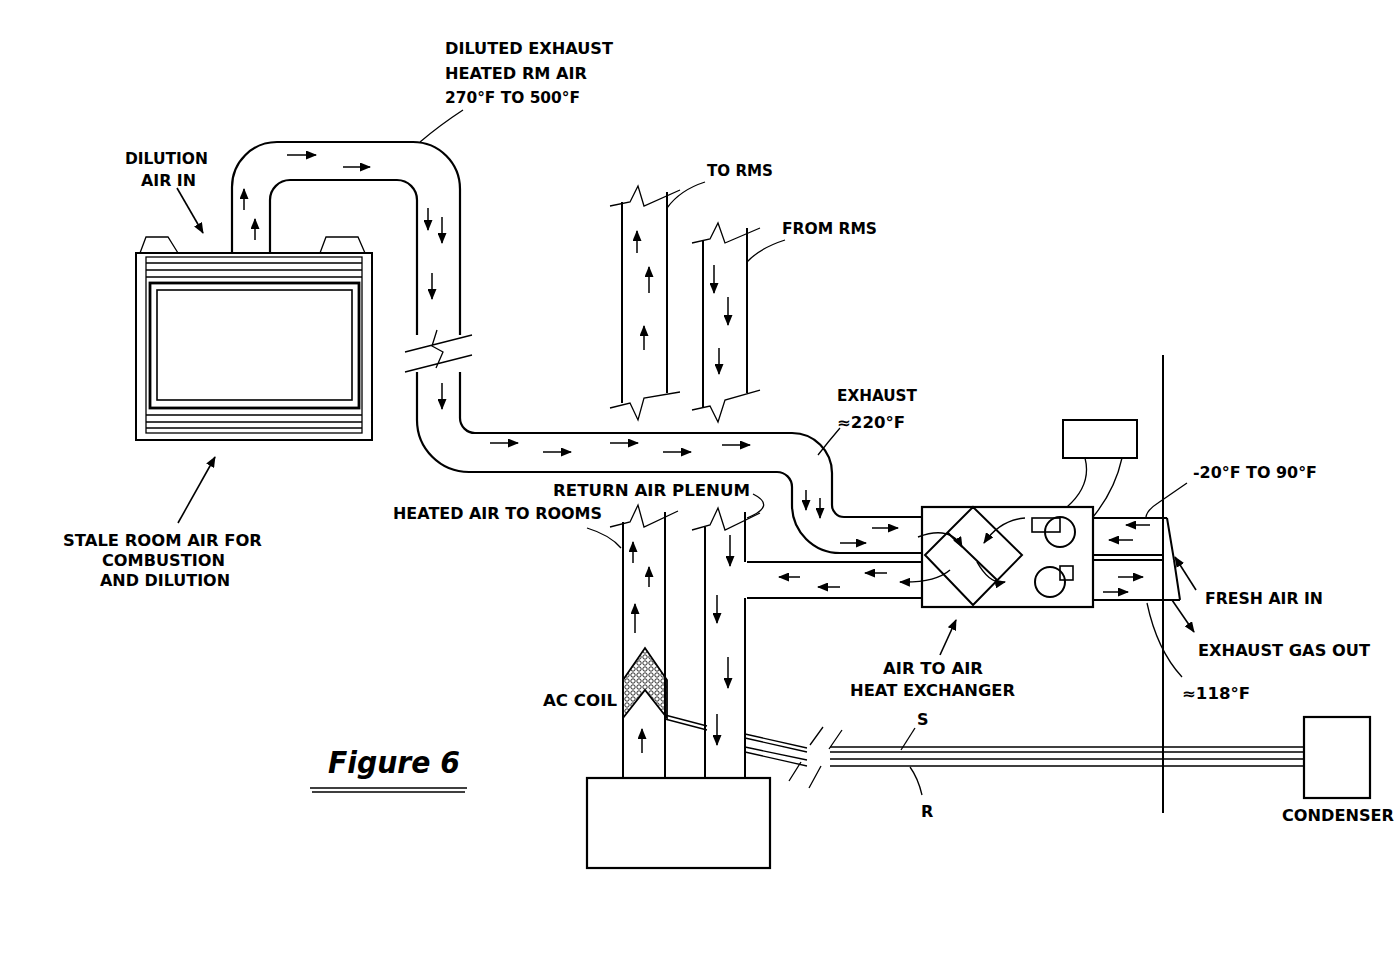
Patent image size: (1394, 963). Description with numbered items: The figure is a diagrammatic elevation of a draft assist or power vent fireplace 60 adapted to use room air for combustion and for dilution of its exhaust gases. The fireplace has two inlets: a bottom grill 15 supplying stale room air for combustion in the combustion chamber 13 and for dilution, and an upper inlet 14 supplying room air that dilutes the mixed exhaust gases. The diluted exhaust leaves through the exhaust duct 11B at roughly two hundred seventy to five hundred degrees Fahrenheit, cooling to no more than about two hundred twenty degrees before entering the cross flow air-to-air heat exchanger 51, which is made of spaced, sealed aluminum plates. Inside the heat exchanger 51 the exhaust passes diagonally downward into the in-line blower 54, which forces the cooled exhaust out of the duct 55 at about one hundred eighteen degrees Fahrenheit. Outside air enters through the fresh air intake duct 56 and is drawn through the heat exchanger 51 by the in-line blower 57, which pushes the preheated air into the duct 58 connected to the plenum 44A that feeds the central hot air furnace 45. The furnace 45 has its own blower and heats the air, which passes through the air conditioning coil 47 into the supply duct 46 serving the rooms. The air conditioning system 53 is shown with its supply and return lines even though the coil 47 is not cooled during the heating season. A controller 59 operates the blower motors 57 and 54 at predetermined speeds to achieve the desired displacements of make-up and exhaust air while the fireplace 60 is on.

The draft assist or power vent fireplace 60 is at (163, 103).
The combustion chamber 13 is at (327, 323).
The inlet 14 is at (274, 272).
The bottom grill 15 is at (305, 418).
The exhaust duct 11B is at (306, 142).
The supply duct 46 is at (622, 295).
The plenum 44A is at (747, 308).
The air conditioning coil 47 is at (624, 678).
The central hot air furnace 45 is at (770, 826).
The duct 58 is at (848, 600).
The cross flow air-to-air heat exchanger 51 is at (954, 484).
The in-line blower 57 is at (1058, 546).
The in-line blower 54 is at (1050, 590).
The controller 59 is at (1103, 420).
The fresh air intake duct 56 is at (1126, 517).
The duct 55 is at (1110, 602).
The air conditioning system 53 is at (1349, 755).